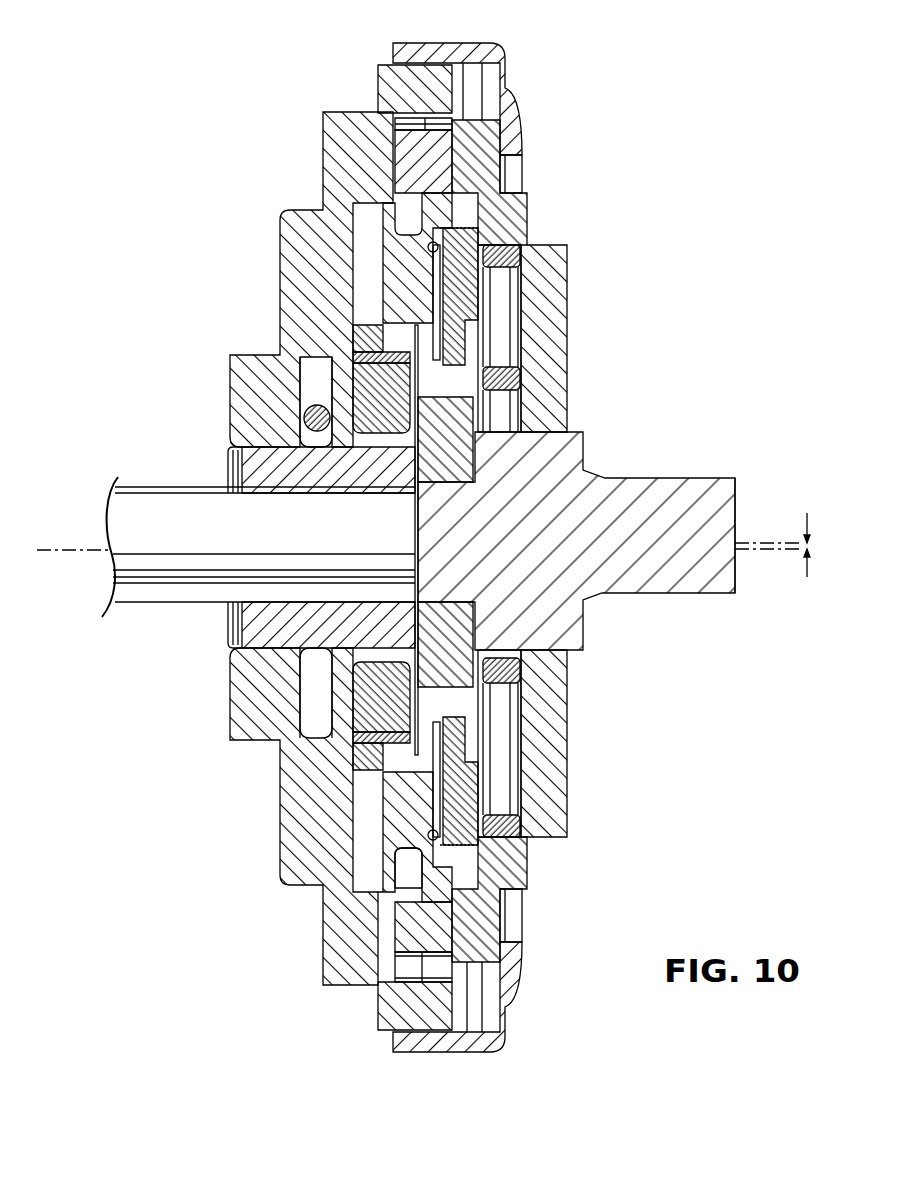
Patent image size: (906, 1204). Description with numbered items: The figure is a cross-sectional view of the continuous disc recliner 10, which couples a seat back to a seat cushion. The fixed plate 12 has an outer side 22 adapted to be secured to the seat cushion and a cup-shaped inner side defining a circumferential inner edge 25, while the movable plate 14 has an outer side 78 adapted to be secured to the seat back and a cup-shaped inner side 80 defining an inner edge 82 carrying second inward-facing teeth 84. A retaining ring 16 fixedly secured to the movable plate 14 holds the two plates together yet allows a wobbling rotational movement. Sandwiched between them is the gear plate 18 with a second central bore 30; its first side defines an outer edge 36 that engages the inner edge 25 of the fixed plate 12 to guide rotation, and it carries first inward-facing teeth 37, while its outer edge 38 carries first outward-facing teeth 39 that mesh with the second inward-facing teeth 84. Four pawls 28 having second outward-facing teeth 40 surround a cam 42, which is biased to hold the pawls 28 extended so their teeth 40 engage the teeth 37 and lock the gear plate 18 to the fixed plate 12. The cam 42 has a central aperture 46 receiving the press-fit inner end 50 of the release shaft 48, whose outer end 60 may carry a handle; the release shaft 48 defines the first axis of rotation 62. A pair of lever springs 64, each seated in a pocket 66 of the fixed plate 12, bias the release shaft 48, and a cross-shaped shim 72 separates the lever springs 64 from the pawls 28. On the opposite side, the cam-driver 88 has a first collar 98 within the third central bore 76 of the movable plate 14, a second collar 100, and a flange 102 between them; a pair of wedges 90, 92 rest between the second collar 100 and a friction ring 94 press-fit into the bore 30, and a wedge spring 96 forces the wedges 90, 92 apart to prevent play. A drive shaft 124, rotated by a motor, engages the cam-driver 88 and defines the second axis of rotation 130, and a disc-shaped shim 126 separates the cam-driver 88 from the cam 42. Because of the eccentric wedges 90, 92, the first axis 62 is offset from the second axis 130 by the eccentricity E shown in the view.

The disc recliner 10 is at (229, 110).
The fixed plate 12 is at (565, 263).
The movable plate 14 is at (289, 230).
The retaining ring 16 is at (497, 48).
The gear plate 18 is at (383, 248).
The outer side 22 is at (567, 325).
The inner edge 25 is at (467, 192).
The pawls 28 is at (470, 298).
The second central bore 30 is at (352, 322).
The outer edge 36 is at (466, 892).
The first inward-facing teeth 37 is at (462, 856).
The outer edge 38 is at (400, 985).
The first outward-facing teeth 39 is at (434, 128).
The second outward-facing teeth 40 is at (520, 848).
The cam 42 is at (453, 427).
The central aperture 46 is at (447, 488).
The release shaft 48 is at (693, 483).
The inner end 50 is at (453, 587).
The outer end 60 is at (722, 593).
The first axis of rotation 62 is at (778, 542).
The lever springs 64 is at (508, 352).
The pocket 66 is at (502, 245).
The cross-shaped shim 72 is at (565, 744).
The third central bore 76 is at (228, 446).
The outer side 78 is at (280, 840).
The inner side 80 is at (400, 845).
The inner edge 82 is at (410, 992).
The second inward-facing teeth 84 is at (393, 112).
The cam-driver 88 is at (270, 627).
The wedge 90 is at (338, 718).
The wedge 92 is at (355, 365).
The friction ring 94 is at (378, 353).
The wedge spring 96 is at (313, 440).
The first collar 98 is at (368, 688).
The second collar 100 is at (370, 378).
The flange 102 is at (363, 735).
The drive shaft 124 is at (153, 502).
The disc-shaped shim 126 is at (440, 752).
The second axis of rotation 130 is at (78, 550).